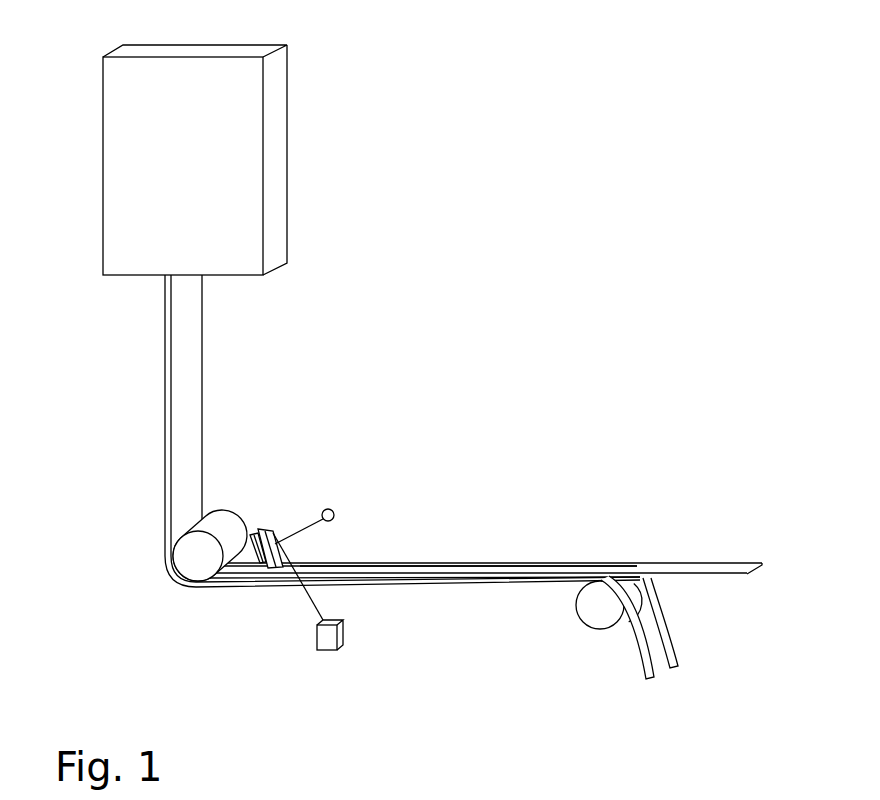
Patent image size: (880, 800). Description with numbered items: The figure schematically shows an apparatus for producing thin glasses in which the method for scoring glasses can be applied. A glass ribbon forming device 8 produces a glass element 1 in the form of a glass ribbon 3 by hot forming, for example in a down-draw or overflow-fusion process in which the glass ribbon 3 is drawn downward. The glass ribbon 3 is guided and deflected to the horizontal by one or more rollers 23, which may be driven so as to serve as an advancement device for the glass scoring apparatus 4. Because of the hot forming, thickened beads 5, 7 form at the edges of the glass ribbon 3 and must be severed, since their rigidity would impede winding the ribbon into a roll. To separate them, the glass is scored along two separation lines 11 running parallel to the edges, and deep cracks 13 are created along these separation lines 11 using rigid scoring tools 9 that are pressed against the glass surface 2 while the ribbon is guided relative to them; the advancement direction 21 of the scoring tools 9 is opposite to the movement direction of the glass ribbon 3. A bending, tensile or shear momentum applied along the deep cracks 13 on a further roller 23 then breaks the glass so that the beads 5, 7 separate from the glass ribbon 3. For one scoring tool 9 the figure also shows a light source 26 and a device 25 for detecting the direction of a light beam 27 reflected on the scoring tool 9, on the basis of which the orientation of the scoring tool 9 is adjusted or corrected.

The glass element 1 is at (700, 566).
The glass surface 2 is at (183, 380).
The glass ribbon 3 is at (699, 565).
The glass scoring apparatus 4 is at (253, 508).
The thickened bead 5 is at (642, 657).
The thickened bead 7 is at (677, 645).
The glass ribbon forming device 8 is at (280, 133).
The scoring tool 9 is at (268, 532).
The separation line 11 is at (320, 565).
The deep crack 13 is at (338, 566).
The advancement direction 21 is at (360, 608).
The roller 23 is at (193, 560).
The device for detecting the direction of a light beam 25 is at (325, 653).
The light source 26 is at (333, 511).
The light beam 27 is at (307, 603).